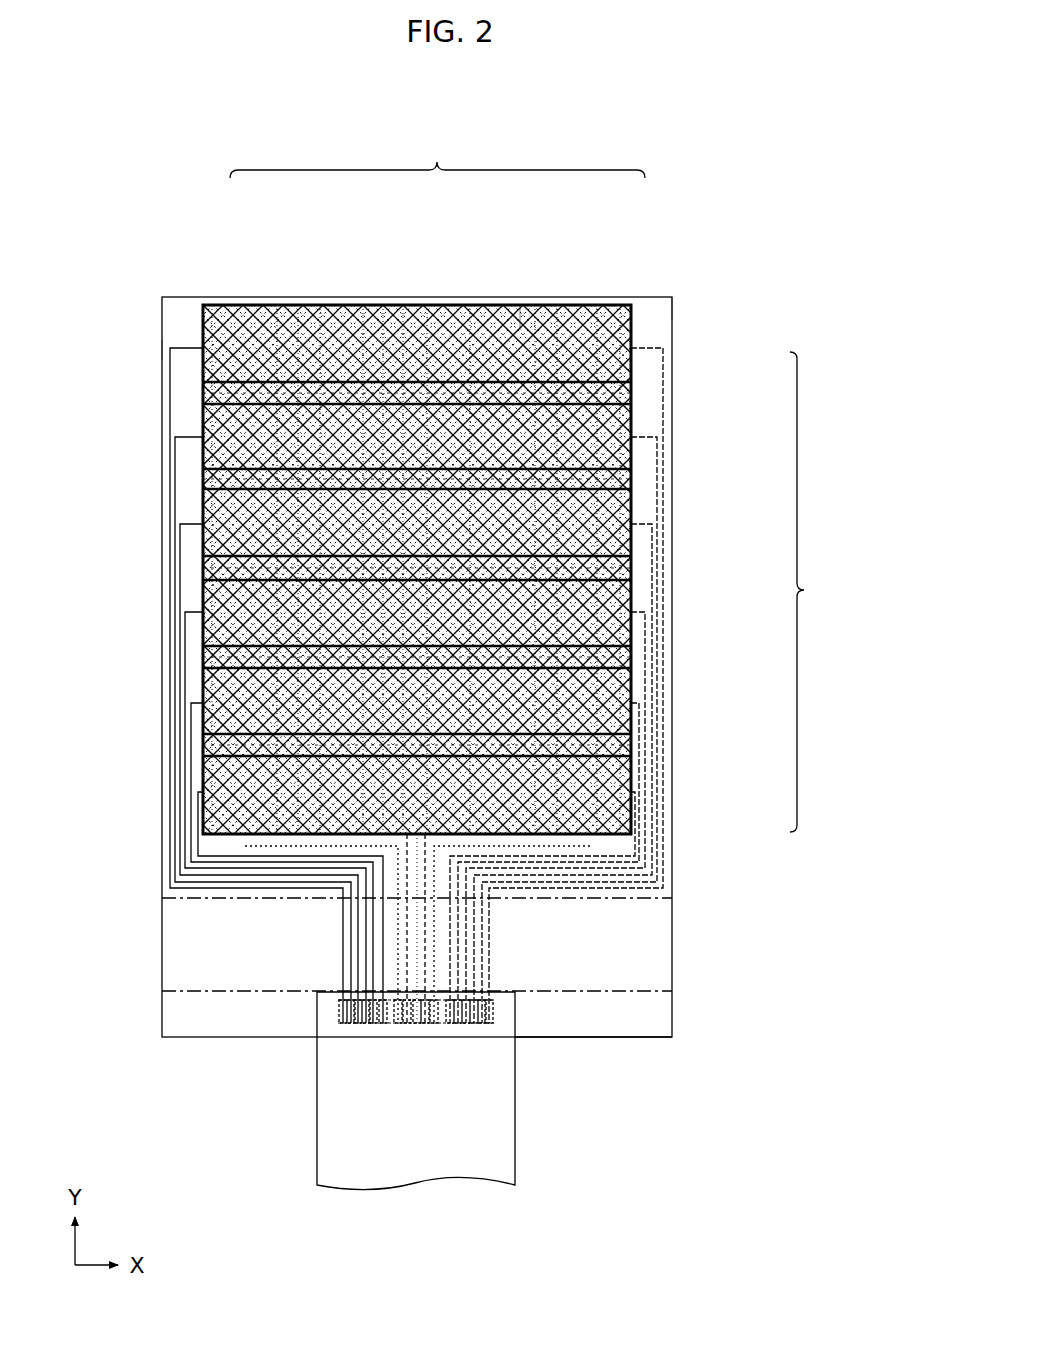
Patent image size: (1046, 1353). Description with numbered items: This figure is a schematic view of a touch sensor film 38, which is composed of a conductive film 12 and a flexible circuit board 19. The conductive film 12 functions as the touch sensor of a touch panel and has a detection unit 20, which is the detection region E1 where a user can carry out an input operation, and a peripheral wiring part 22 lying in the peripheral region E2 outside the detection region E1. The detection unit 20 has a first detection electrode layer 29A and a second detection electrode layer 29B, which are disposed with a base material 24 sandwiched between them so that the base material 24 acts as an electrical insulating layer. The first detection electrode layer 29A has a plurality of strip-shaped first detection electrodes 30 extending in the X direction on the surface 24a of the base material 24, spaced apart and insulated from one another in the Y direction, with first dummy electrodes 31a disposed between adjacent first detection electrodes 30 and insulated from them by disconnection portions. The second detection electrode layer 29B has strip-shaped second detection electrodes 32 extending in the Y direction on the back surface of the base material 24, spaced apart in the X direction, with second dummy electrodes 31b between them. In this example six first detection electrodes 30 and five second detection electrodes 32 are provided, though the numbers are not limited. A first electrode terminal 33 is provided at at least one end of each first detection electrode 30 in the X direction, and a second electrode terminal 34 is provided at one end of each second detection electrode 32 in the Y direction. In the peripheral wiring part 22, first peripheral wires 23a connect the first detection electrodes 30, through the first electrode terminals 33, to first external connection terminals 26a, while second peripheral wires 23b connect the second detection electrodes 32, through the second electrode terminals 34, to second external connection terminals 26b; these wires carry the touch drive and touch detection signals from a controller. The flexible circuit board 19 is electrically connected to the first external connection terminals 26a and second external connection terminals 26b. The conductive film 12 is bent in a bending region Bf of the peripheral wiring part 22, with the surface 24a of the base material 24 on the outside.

The conductive film 12 is at (464, 606).
The flexible circuit board 19 is at (360, 1128).
The detection unit 20 is at (520, 322).
The peripheral wiring part 22 is at (418, 685).
The first peripheral wire 23a is at (198, 805).
The second peripheral wire 23b is at (492, 898).
The base material 24 is at (653, 333).
The surface of the base material 24a is at (655, 950).
The first external connection terminal 26a is at (365, 1037).
The second external connection terminal 26b is at (420, 1037).
The first detection electrode layer 29A is at (825, 592).
The second detection electrode layer 29B is at (437, 152).
The first detection electrode 30 is at (606, 370).
The first dummy electrode 31a is at (606, 394).
The second dummy electrode 31b is at (285, 298).
The second detection electrode 32 is at (242, 298).
The first electrode terminal 33 is at (200, 328).
The second electrode terminal 34 is at (224, 838).
The touch sensor film 38 is at (703, 893).
The bending region Bf is at (180, 945).
The detection region E1 is at (220, 284).
The peripheral region E2 is at (157, 352).